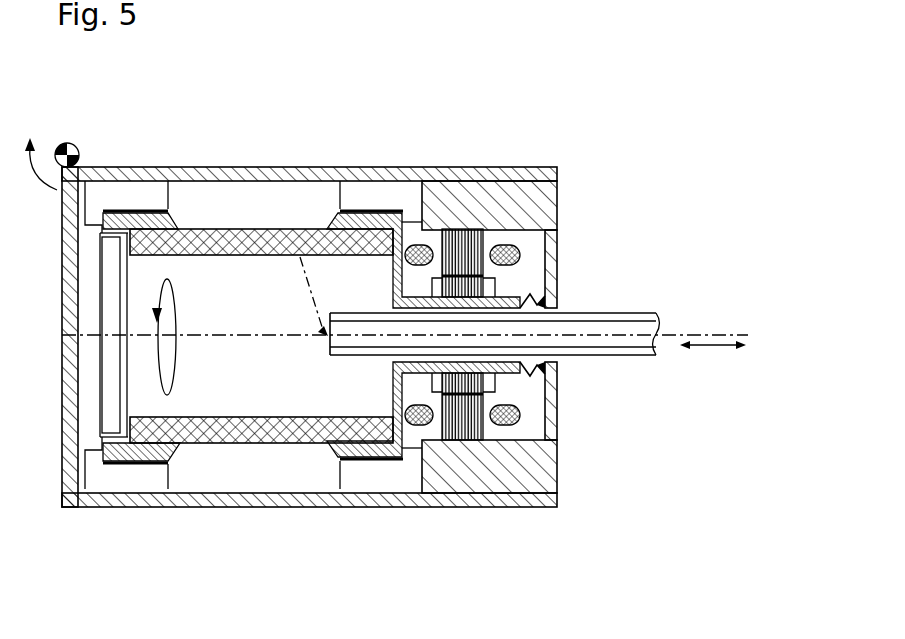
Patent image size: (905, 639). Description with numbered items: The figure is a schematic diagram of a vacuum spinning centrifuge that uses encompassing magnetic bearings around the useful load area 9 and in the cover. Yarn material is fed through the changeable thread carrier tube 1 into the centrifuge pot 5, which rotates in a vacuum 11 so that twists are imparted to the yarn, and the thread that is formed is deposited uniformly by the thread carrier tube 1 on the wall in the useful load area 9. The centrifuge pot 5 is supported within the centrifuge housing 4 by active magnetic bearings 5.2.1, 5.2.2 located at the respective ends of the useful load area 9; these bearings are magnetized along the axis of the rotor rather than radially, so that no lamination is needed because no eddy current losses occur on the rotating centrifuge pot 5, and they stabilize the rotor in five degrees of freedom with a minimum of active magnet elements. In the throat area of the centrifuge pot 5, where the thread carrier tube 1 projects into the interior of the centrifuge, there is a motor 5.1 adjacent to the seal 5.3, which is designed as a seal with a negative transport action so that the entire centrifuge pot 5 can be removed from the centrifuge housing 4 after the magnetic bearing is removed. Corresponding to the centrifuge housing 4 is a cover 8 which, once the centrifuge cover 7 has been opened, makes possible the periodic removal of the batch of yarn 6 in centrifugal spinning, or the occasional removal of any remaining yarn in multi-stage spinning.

The thread carrier tube 1 is at (580, 353).
The centrifuge housing 4 is at (448, 500).
The centrifuge pot 5 is at (277, 448).
The motor 5.1 is at (463, 229).
The magnetic bearing 5.2.1 is at (133, 177).
The magnetic bearing 5.2.2 is at (387, 175).
The seal 5.3 is at (543, 300).
The batch of yarn 6 is at (273, 255).
The centrifuge cover 7 is at (100, 413).
The cover 8 is at (62, 297).
The useful load area 9 is at (382, 105).
The vacuum 11 is at (308, 470).